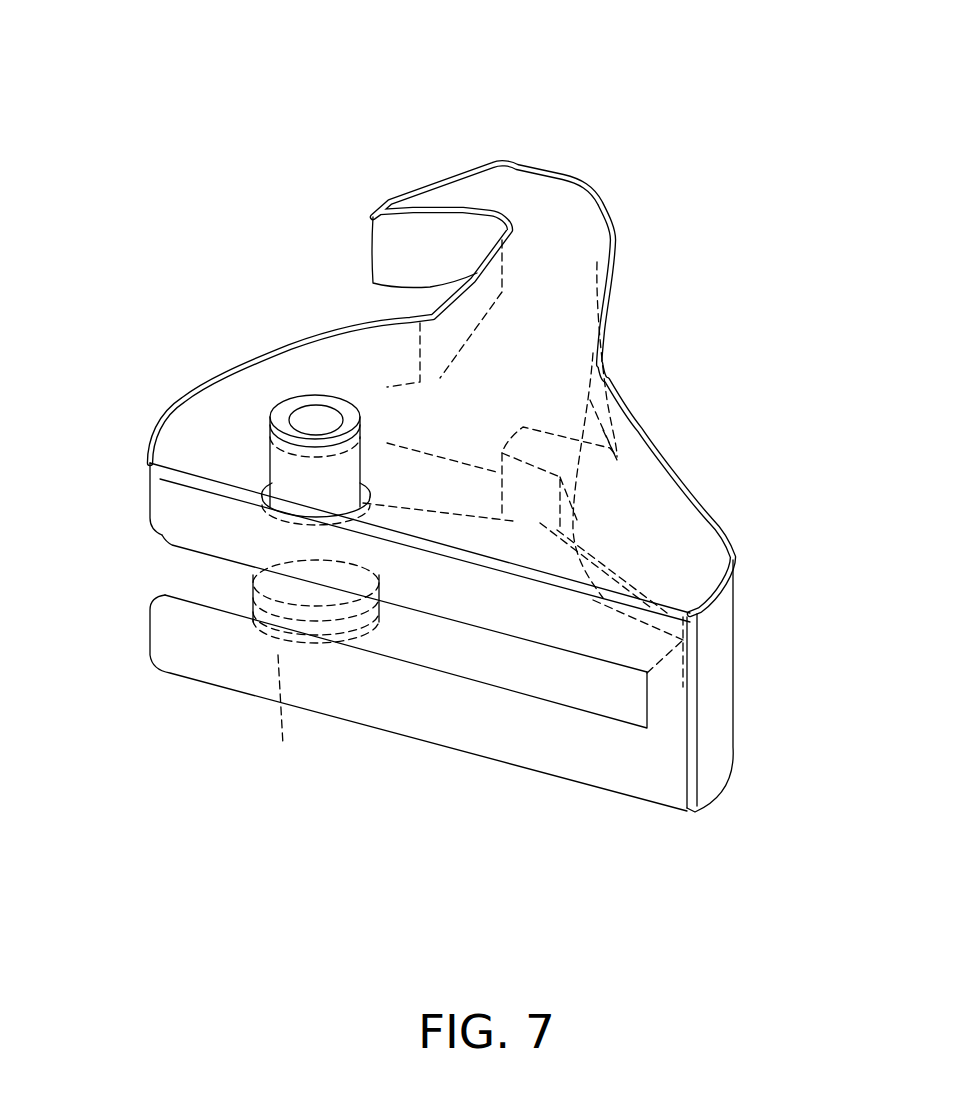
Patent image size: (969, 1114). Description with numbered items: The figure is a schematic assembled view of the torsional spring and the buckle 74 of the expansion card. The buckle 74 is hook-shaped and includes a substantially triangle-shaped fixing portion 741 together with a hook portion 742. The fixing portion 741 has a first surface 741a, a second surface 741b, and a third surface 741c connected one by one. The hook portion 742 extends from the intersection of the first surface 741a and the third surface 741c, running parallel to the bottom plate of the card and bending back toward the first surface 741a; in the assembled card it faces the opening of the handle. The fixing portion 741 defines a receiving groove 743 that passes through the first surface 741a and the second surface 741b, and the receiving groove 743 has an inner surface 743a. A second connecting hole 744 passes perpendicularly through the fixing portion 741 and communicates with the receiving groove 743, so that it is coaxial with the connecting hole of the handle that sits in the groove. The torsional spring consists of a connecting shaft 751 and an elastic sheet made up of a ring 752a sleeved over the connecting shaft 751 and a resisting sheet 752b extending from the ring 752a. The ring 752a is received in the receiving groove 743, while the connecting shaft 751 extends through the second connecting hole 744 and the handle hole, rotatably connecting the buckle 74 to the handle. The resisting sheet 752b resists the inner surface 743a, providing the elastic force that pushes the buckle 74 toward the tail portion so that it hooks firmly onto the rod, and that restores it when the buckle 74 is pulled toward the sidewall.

The buckle 74 is at (432, 58).
The fixing portion 741 is at (643, 523).
The first surface 741a is at (213, 387).
The second surface 741b is at (230, 527).
The third surface 741c is at (707, 692).
The hook portion 742 is at (453, 197).
The receiving groove 743 is at (530, 675).
The inner surface 743a is at (590, 440).
The second connecting hole 744 is at (345, 410).
The connecting shaft 751 is at (308, 420).
The ring 752a is at (307, 537).
The resisting sheet 752b is at (623, 617).